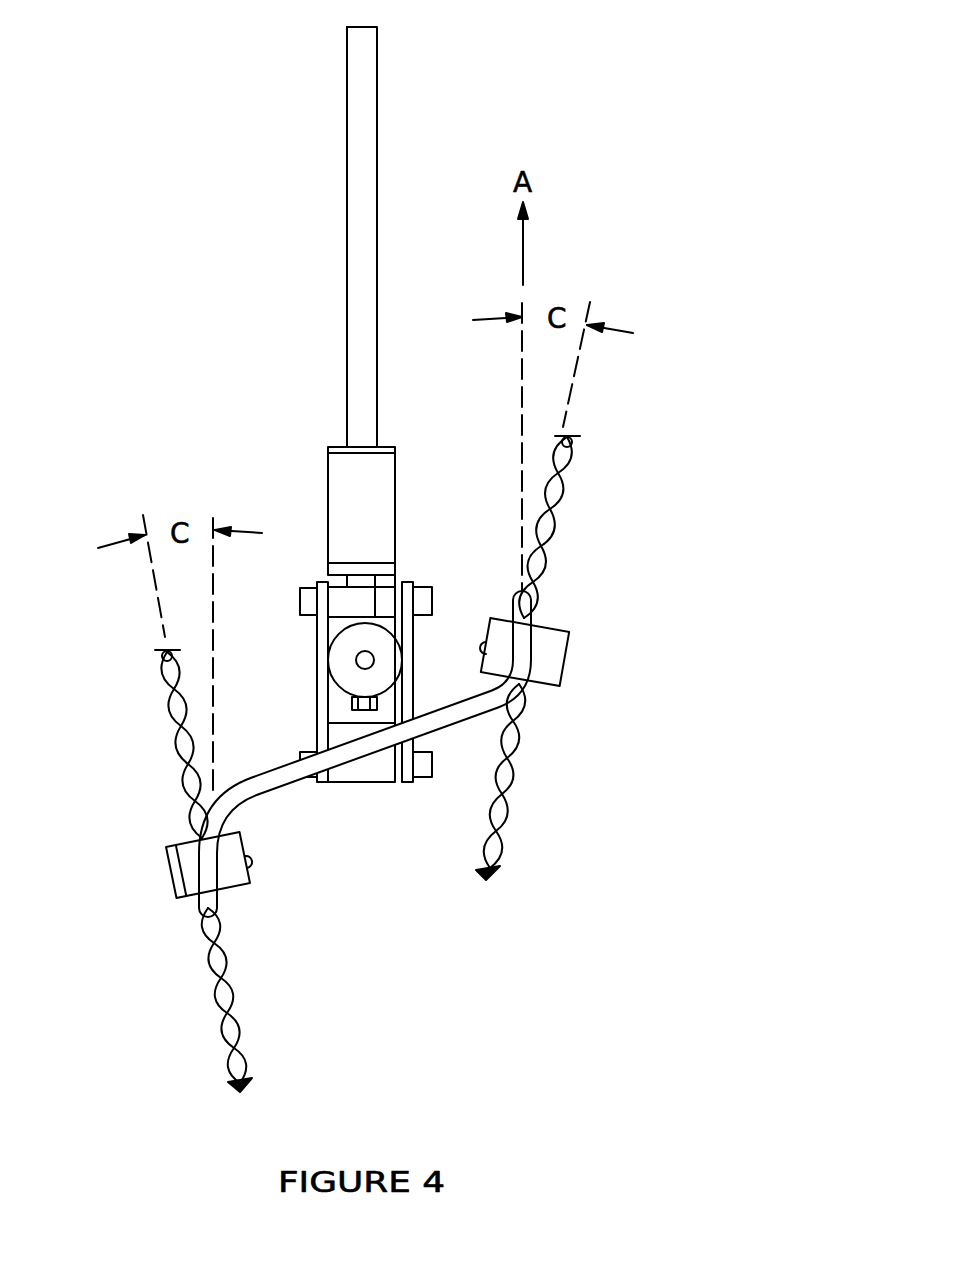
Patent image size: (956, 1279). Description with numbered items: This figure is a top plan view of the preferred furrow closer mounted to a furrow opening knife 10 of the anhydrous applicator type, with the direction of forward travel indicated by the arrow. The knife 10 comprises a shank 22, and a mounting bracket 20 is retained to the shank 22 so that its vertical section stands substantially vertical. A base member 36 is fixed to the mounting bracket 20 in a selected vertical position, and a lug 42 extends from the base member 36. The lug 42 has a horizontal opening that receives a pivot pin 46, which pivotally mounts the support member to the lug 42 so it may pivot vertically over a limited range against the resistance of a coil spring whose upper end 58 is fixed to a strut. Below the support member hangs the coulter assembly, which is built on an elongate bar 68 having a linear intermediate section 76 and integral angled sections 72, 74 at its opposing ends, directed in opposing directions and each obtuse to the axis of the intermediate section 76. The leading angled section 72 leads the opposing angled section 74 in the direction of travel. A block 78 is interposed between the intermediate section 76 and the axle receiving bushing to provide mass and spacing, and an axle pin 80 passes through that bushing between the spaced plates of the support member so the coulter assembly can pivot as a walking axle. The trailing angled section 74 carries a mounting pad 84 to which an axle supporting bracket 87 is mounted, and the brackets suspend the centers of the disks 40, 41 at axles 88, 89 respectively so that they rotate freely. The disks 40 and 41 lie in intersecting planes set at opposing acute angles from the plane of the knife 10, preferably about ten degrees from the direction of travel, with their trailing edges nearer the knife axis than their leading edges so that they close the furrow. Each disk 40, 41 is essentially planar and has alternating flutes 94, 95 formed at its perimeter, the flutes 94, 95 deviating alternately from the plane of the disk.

The furrow opening knife 10 is at (347, 120).
The shank 22 is at (357, 228).
The mounting bracket 20 is at (370, 467).
The base member 36 is at (387, 567).
The lug 42 is at (387, 583).
The pivot pin 46 is at (308, 598).
The upper end of coil spring 58 is at (345, 657).
The intermediate section 76 is at (365, 752).
The block 78 is at (363, 772).
The elongate bar 68 is at (297, 770).
The axle pin 80 is at (418, 772).
The angled section 74 is at (207, 873).
The angled section 72 is at (530, 647).
The axle 88 is at (483, 635).
The mounting pad 84 is at (190, 855).
The axle supporting bracket 87 is at (167, 873).
The axle 89 is at (247, 860).
The disk 40 is at (558, 528).
The disk 41 is at (160, 712).
The flutes 94 is at (503, 812).
The flutes 95 is at (492, 813).